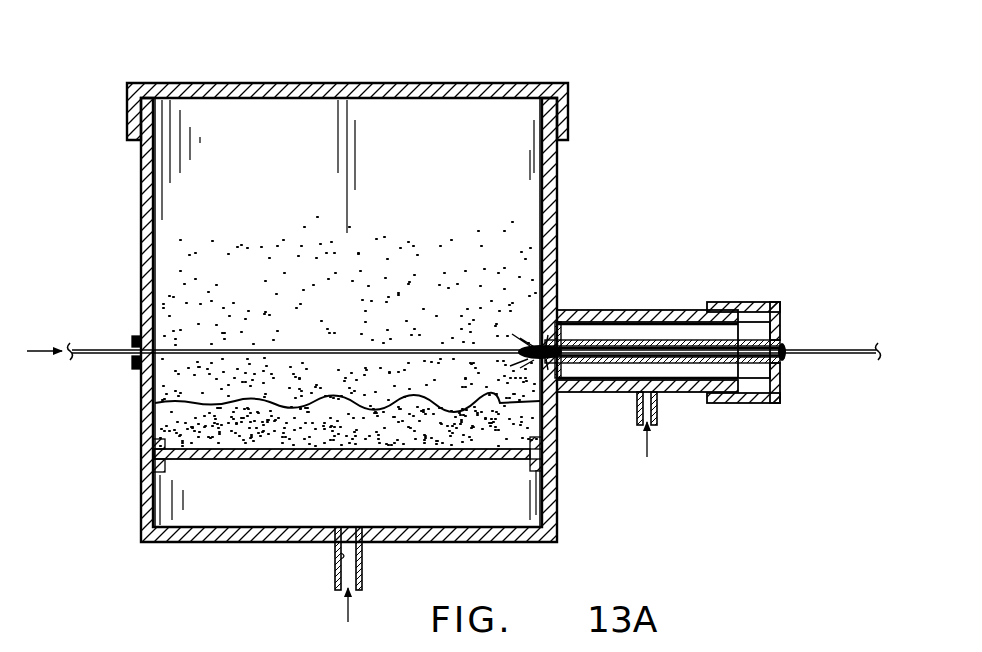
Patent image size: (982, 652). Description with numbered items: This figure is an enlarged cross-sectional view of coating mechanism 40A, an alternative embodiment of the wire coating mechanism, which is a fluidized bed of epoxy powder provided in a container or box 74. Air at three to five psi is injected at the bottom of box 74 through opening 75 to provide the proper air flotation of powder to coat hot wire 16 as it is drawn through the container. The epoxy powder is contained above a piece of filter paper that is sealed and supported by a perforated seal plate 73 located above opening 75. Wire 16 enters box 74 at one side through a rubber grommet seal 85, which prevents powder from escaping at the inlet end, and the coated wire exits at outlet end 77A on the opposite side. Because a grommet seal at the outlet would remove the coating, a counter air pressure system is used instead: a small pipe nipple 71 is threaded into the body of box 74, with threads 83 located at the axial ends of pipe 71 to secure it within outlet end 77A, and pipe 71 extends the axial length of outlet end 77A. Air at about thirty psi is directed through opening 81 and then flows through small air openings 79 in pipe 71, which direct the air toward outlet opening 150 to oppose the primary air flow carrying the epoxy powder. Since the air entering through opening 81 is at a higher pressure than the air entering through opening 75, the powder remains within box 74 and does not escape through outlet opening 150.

The coating mechanism 40A is at (583, 79).
The box 74 is at (348, 93).
The perforated seal plate 73 is at (298, 461).
The opening 75 is at (336, 561).
The outlet end 77A is at (649, 303).
The pipe nipple 71 is at (678, 310).
The air openings 79 is at (591, 320).
The opening 81 is at (656, 400).
The wire 16 is at (100, 348).
The rubber grommet seal 85 is at (131, 362).
The threads 83 is at (536, 338).
The outlet opening 150 is at (557, 308).